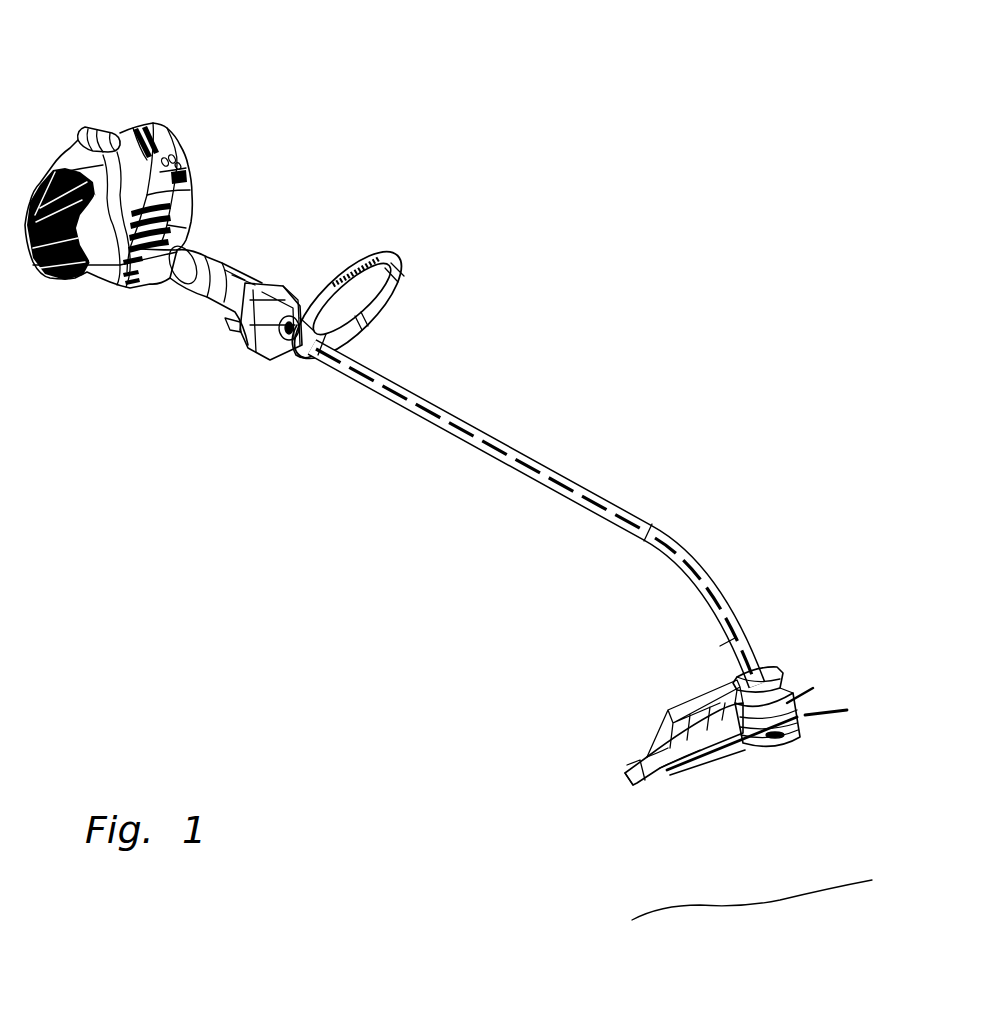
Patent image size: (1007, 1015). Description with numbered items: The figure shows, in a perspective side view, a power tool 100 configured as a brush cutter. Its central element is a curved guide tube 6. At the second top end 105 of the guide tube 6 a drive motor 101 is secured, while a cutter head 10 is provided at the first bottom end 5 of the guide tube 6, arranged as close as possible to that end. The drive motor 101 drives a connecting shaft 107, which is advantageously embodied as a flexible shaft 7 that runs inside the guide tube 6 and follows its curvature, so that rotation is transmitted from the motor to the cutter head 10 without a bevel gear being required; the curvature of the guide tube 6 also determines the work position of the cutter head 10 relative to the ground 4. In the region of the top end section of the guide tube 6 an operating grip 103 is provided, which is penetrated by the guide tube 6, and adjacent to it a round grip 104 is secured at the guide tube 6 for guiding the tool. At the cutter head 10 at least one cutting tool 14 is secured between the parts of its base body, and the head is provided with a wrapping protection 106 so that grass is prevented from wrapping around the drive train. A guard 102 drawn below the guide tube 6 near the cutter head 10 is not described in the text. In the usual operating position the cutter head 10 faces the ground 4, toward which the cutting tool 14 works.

The power tool 100 is at (474, 202).
The drive motor 101 is at (152, 190).
The operating grip 103 is at (200, 273).
The round grip 104 is at (352, 270).
The second top end 105 is at (318, 368).
The flexible shaft 7 is at (463, 427).
The guide tube 6 is at (533, 455).
The connecting shaft 107 is at (578, 481).
The guard 102 is at (697, 702).
The first bottom end 5 is at (760, 677).
The wrapping protection 106 is at (780, 700).
The cutting tool 14 is at (820, 717).
The cutter head 10 is at (785, 762).
The ground 4 is at (650, 913).